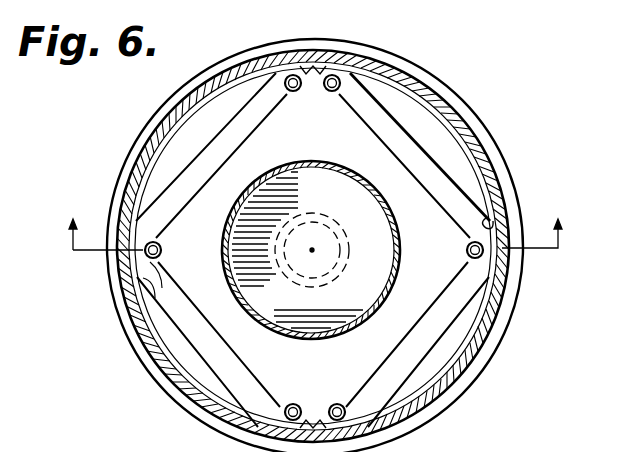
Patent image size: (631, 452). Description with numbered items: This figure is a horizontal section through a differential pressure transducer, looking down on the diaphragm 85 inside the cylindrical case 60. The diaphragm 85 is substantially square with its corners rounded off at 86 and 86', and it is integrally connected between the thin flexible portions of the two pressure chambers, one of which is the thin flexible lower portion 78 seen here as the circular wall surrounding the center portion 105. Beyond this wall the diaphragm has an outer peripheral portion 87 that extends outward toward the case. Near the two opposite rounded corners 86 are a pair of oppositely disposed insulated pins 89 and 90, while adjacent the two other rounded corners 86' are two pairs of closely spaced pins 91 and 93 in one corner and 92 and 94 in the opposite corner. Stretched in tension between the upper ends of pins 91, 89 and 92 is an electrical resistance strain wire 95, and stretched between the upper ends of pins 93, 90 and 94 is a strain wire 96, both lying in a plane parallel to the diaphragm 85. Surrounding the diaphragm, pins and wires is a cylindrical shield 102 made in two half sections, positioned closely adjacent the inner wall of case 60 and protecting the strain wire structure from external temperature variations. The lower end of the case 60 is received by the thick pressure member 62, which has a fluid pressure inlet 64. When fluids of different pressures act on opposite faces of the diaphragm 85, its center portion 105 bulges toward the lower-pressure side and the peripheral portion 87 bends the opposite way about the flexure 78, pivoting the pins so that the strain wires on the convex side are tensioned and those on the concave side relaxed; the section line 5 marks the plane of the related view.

The section line 5- 5 is at (313, 222).
The cylindrical case 60 is at (494, 342).
The pressure member 62 is at (469, 381).
The fluid pressure inlet 64 is at (327, 218).
The thin flexible lower portion 78 is at (231, 281).
The diaphragm 85 is at (326, 195).
The rounded corner 86 is at (304, 246).
The rounded corner 86' is at (331, 218).
The outer peripheral portion 87 is at (210, 304).
The insulated pin 89 is at (162, 248).
The insulated pin 90 is at (466, 251).
The pin 91 is at (282, 96).
The pin 92 is at (293, 403).
The pin 93 is at (340, 93).
The pin 94 is at (342, 404).
The electrical resistance strain wire 95 is at (222, 165).
The strain wire 96 is at (453, 218).
The cylindrical shield 102 is at (500, 314).
The center portion 105 is at (360, 304).